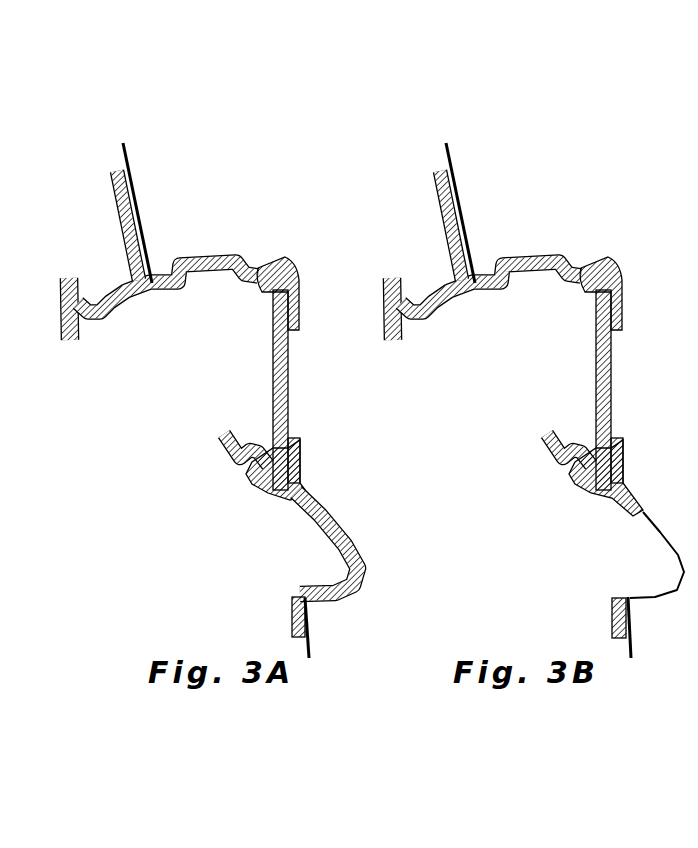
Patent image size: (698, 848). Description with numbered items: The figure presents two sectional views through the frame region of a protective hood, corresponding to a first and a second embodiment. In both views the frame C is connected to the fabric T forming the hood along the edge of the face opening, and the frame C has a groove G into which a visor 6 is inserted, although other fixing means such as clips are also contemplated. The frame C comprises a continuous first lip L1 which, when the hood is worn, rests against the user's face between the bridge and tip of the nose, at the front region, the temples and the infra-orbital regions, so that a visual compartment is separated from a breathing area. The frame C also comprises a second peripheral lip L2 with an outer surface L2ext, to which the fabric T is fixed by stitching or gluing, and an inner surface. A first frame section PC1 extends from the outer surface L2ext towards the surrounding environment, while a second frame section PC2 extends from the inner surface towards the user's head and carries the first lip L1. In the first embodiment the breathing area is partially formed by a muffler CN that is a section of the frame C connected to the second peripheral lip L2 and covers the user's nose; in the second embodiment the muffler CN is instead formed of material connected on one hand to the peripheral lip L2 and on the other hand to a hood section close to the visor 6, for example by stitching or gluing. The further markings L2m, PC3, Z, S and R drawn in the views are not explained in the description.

In FIG. 3A, the fabric T is at (134, 166).
In FIG. 3B, the fabric T is at (554, 400).
In FIG. 3A, the first lip L1 is at (79, 331).
In FIG. 3B, the first lip L1 is at (491, 374).
In FIG. 3A, the second peripheral lip L2 is at (120, 192).
In FIG. 3B, the second peripheral lip L2 is at (503, 402).
In FIG. 3A, the median portion of second lip L2m is at (138, 266).
In FIG. 3B, the median portion of second lip L2m is at (419, 251).
In FIG. 3A, the outer surface L2ext is at (158, 272).
In FIG. 3B, the outer surface L2ext is at (491, 274).
In FIG. 3A, the first frame section PC1 is at (297, 222).
In FIG. 3B, the first frame section PC1 is at (545, 206).
In FIG. 3A, the second frame section PC2 is at (290, 588).
In FIG. 3B, the second frame section PC2 is at (506, 603).
In FIG. 3A, the third contact portion PC3 is at (155, 346).
In FIG. 3B, the third contact portion PC3 is at (432, 361).
In FIG. 3A, the frame C is at (276, 264).
In FIG. 3B, the frame C is at (589, 250).
In FIG. 3A, the groove G is at (290, 268).
In FIG. 3B, the groove G is at (617, 364).
In FIG. 3A, the visor 6 is at (289, 385).
In FIG. 3B, the visor 6 is at (612, 390).
In FIG. 3A, the zone Z is at (218, 371).
In FIG. 3B, the zone Z is at (541, 371).
In FIG. 3A, the wheel section S is at (177, 410).
In FIG. 3B, the wheel section S is at (470, 430).
In FIG. 3A, the muffler CN is at (340, 537).
In FIG. 3B, the muffler CN is at (630, 519).
In FIG. 3A, the rounded portion R is at (308, 551).
In FIG. 3B, the rounded portion R is at (638, 552).